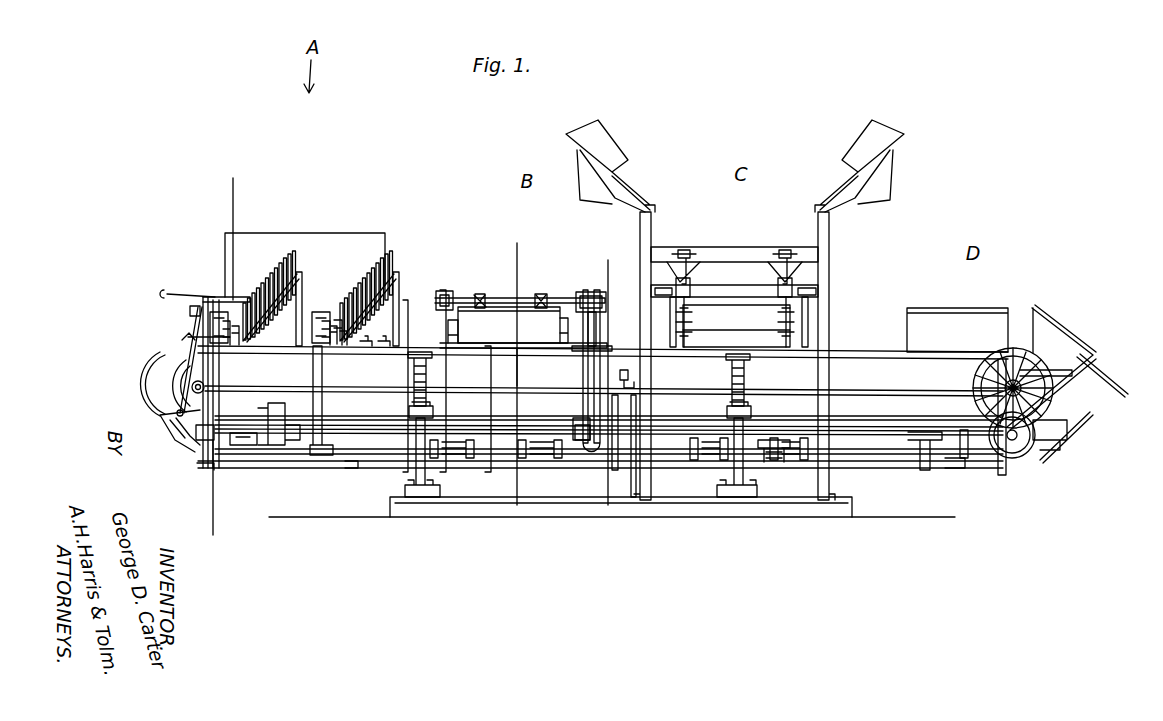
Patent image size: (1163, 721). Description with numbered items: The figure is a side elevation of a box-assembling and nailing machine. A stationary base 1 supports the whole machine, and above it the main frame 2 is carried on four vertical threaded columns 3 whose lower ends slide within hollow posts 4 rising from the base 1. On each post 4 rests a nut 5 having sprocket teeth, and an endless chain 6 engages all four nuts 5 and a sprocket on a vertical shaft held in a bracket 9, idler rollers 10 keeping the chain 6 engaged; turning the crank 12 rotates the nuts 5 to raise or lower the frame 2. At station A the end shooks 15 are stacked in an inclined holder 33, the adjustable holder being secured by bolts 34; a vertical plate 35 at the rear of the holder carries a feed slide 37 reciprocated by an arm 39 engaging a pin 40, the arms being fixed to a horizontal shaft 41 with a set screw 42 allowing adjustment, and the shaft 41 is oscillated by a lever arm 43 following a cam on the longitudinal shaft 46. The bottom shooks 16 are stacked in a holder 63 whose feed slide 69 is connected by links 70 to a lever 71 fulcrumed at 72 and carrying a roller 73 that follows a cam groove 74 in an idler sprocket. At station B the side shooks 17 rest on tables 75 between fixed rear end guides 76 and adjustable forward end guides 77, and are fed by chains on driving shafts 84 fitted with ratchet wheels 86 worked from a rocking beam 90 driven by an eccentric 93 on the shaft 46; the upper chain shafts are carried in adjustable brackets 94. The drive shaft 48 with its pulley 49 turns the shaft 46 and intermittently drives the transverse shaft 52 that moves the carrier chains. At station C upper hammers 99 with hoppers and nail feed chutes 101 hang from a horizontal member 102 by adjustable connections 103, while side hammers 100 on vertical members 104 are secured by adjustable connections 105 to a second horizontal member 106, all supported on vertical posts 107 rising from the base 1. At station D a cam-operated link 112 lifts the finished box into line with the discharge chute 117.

The stationary base 1 is at (571, 508).
The main frame 2 is at (885, 472).
The vertical threaded column 3 is at (205, 210).
The hollow post 4 is at (421, 500).
The nut 5 is at (485, 262).
The endless chain 6 is at (655, 495).
The bracket 9 is at (609, 424).
The idler roller 10 is at (578, 270).
The crank 12 is at (621, 371).
The end shook 15 is at (272, 245).
The bottom shook 16 is at (517, 320).
The side shook 17 is at (733, 328).
The inclined holder 33 is at (322, 298).
The bolt 34 is at (376, 331).
The vertical plate 35 is at (210, 300).
The feed slide 37 is at (212, 317).
The arm 39 is at (212, 440).
The pin 40 is at (215, 333).
The horizontal shaft 41 is at (358, 470).
The set screw 42 is at (331, 446).
The lever arm 43 is at (272, 447).
The longitudinal shaft 46 is at (773, 465).
The transverse drive shaft 48 is at (1025, 437).
The pulley 49 is at (1028, 453).
The transverse shaft 52 is at (1043, 397).
The holder 63 is at (305, 242).
The feed slide 69 is at (220, 322).
The link 70 is at (198, 308).
The lever 71 is at (165, 370).
The fulcrum 72 is at (172, 414).
The roller 73 is at (186, 388).
The cam groove 74 is at (180, 357).
The table 75 is at (529, 367).
The fixed rear end guide 76 is at (449, 331).
The adjustable forward end guide 77 is at (563, 333).
The driving shaft 84 is at (503, 298).
The ratchet wheel 86 is at (592, 293).
The rocking beam 90 is at (612, 480).
The eccentric 93 is at (583, 455).
The bracket 94 is at (452, 290).
The upper hammer 99 is at (690, 288).
The side hammer 100 is at (692, 318).
The hopper and nail feed chute 101 is at (590, 142).
The horizontal member 102 is at (742, 250).
The adjustable connection 103 is at (687, 250).
The vertical member 104 is at (666, 324).
The adjustable connection 105 is at (658, 291).
The second horizontal member 106 is at (740, 286).
The vertical post 107 is at (642, 230).
The link 112 is at (1118, 379).
The discharge chute 117 is at (1065, 335).